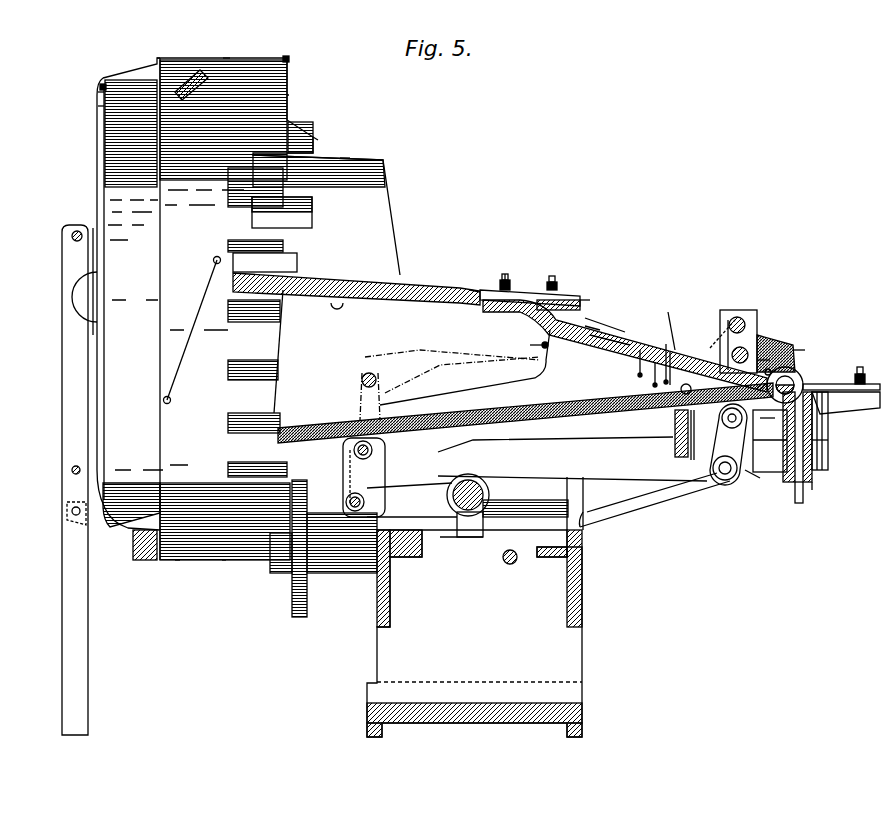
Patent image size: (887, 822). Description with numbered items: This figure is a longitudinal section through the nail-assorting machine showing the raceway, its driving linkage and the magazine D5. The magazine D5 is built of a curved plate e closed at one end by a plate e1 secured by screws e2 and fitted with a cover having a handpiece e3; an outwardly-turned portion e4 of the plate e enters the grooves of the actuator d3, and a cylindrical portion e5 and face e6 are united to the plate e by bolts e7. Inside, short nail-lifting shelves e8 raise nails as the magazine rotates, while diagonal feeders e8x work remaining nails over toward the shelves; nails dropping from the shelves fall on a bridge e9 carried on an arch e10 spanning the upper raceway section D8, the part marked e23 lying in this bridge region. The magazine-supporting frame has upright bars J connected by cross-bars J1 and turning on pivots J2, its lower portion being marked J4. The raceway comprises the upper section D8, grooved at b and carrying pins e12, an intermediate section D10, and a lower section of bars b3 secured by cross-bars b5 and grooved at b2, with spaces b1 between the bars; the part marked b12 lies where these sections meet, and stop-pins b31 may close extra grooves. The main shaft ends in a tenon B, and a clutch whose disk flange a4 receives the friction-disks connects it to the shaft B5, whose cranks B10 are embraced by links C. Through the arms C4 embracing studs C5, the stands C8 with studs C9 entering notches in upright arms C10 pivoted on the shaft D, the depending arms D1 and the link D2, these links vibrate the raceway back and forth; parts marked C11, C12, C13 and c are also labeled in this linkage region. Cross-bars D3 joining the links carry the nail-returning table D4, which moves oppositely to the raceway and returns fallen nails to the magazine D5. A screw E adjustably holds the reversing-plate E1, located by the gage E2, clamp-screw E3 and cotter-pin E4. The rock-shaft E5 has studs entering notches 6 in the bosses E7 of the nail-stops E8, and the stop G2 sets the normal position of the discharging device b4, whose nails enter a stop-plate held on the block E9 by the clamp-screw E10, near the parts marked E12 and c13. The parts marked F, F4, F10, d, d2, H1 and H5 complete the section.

The upright bars J is at (70, 240).
The cross-bars J1 is at (76, 231).
The pivots J2 is at (72, 511).
The post lower part J4 is at (62, 598).
The curved plate e is at (106, 80).
The plate e1 is at (98, 106).
The screws e2 is at (98, 92).
The handpiece e3 is at (72, 294).
The outwardly-turned portion e4 is at (160, 58).
The cylindrical portion e5 is at (225, 58).
The face e6 is at (296, 84).
The bolts e7 is at (300, 56).
The nail-lifting shelves e8 is at (232, 117).
The feeders e8x is at (197, 66).
The bridge e9 is at (300, 124).
The arch e10 is at (346, 158).
The pins e12 is at (442, 284).
The drum step e23 is at (318, 140).
The shaft D is at (612, 328).
The depending arms D1 is at (776, 488).
The link D2 is at (704, 478).
The cross-bars D3 is at (672, 426).
The nail-returning table D4 is at (496, 405).
The magazine D5 is at (140, 60).
The upper section D8 is at (398, 292).
The intermediate connecting-section D10 is at (505, 318).
The screw E is at (780, 427).
The reversing-plate E1 is at (620, 286).
The gage E2 is at (500, 279).
The adjusting clamp-screw E3 is at (534, 260).
The cotter-pin E4 is at (766, 409).
The rock-shaft E5 is at (806, 284).
The bosses E7 is at (737, 318).
The nail-stops E8 is at (826, 330).
The block E9 is at (578, 306).
The clamp-screw E10 is at (880, 350).
The top plate E12 is at (820, 378).
The grooves b is at (483, 305).
The spaces b1 is at (540, 346).
The grooves b2 is at (610, 334).
The bars b3 is at (610, 352).
The discharging device b4 is at (525, 292).
The cross-bars b5 is at (565, 352).
The lever rod b12 is at (605, 322).
The stop-pins b31 is at (670, 323).
The links C is at (452, 500).
The upwardly-extended arms C4 is at (380, 410).
The shafts or studs C5 is at (372, 376).
The stands C8 is at (712, 346).
The studs C9 is at (724, 318).
The upright arms C10 is at (700, 386).
The pivot C11 is at (345, 498).
The bracket C12 is at (352, 466).
The pivot C13 is at (800, 328).
The stop G2 is at (800, 372).
The notches 6 is at (748, 350).
The bracket c is at (778, 458).
The wedge c13 is at (850, 384).
The frame F is at (828, 462).
The frame plate F4 is at (835, 449).
The frame foot F10 is at (810, 492).
The plate d is at (795, 496).
The gear d2 is at (292, 575).
The actuator d3 is at (224, 562).
The flange a4 is at (178, 562).
The tenon B is at (533, 503).
The shaft B5 is at (440, 520).
The cranks or eccentrics B10 is at (490, 484).
The base H1 is at (582, 652).
The base pin H5 is at (510, 550).